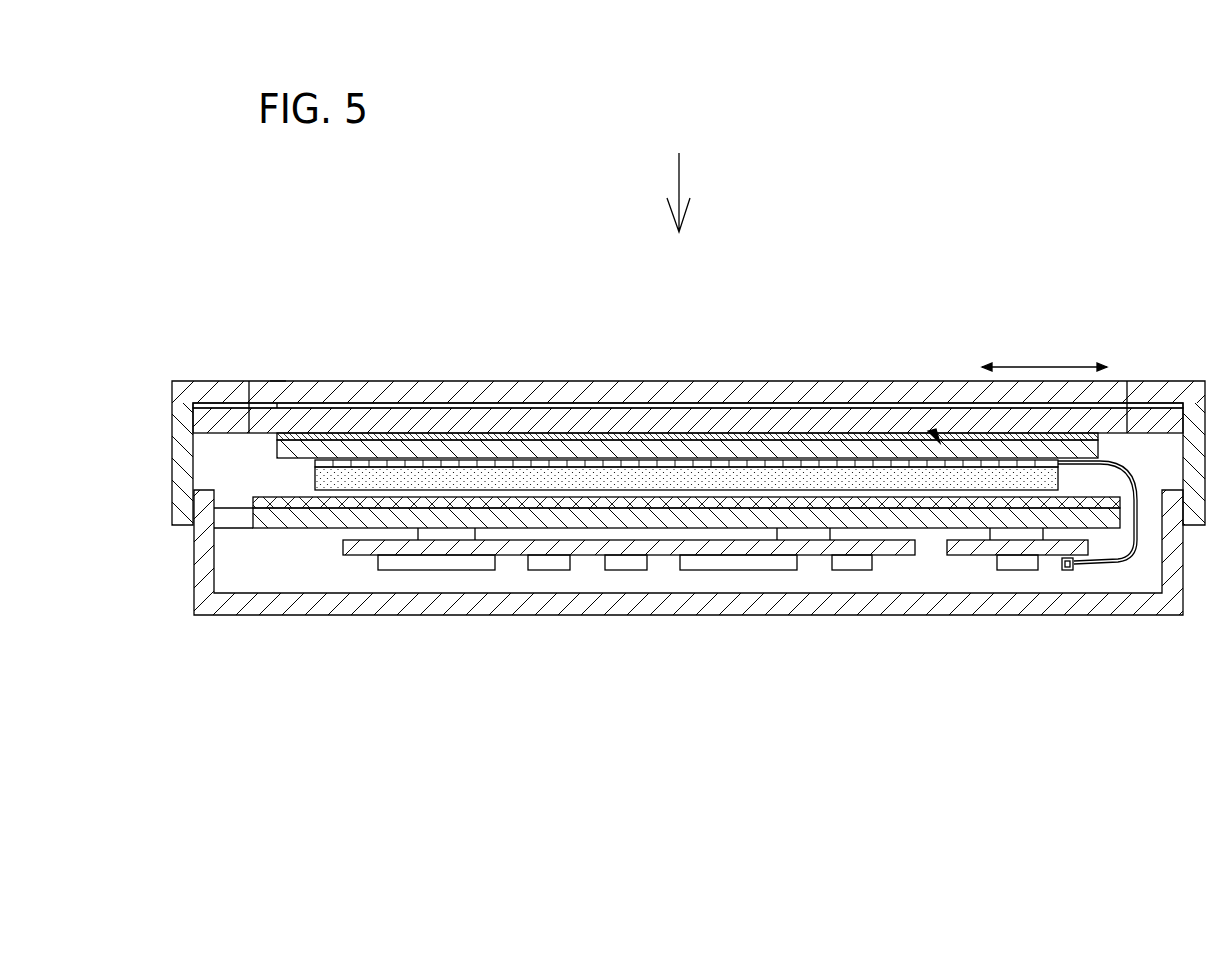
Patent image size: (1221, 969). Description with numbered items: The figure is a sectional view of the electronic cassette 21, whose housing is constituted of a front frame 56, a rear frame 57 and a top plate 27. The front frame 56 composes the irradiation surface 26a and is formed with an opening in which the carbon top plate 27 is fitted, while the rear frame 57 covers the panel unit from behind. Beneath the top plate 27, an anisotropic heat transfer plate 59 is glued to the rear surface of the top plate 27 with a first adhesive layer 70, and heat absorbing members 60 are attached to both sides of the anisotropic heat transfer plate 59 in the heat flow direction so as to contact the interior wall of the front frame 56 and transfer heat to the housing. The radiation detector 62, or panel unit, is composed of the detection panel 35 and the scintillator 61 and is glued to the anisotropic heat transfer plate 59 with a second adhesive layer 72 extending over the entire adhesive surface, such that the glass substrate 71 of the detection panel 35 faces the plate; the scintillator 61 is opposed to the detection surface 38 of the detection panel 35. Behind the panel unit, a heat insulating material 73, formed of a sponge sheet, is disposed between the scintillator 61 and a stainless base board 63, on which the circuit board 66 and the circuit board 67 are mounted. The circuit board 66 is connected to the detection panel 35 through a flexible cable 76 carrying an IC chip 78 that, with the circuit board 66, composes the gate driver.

The electronic cassette 21 is at (667, 388).
The irradiation surface 26a is at (278, 382).
The top plate 27 is at (568, 387).
The detection panel 35 is at (935, 435).
The detection surface 38 is at (316, 475).
The front frame 56 is at (178, 470).
The rear frame 57 is at (198, 548).
The anisotropic heat transfer plate 59 is at (503, 423).
The heat absorbing member 60 is at (226, 418).
The scintillator 61 is at (802, 480).
The radiation detector 62 is at (688, 341).
The base board 63 is at (274, 523).
The circuit board 66 is at (957, 555).
The circuit board 67 is at (362, 555).
The first adhesive layer 70 is at (326, 420).
The glass substrate 71 is at (428, 450).
The second adhesive layer 72 is at (372, 437).
The heat insulating material 73 is at (260, 500).
The flexible cable 76 is at (1135, 483).
The IC chip 78 is at (1088, 568).